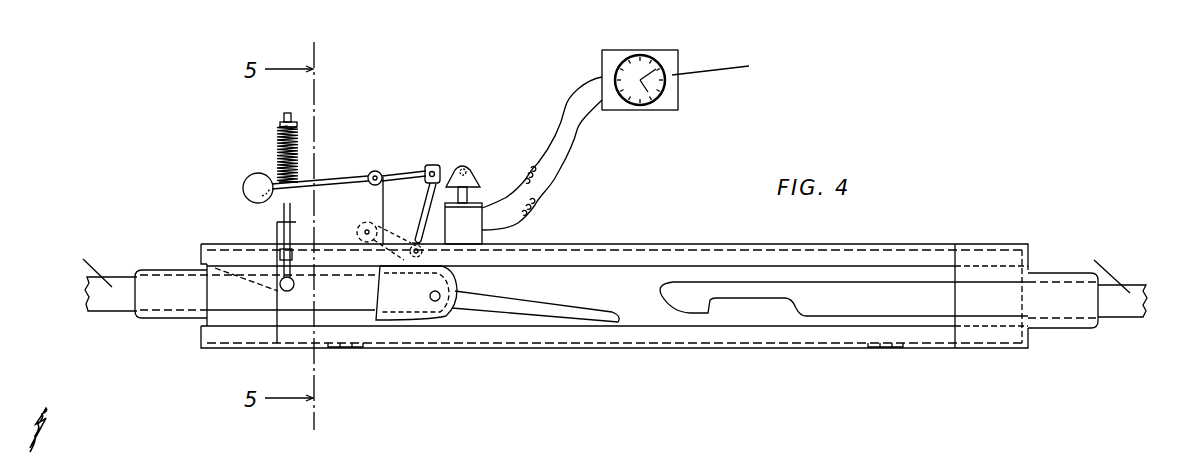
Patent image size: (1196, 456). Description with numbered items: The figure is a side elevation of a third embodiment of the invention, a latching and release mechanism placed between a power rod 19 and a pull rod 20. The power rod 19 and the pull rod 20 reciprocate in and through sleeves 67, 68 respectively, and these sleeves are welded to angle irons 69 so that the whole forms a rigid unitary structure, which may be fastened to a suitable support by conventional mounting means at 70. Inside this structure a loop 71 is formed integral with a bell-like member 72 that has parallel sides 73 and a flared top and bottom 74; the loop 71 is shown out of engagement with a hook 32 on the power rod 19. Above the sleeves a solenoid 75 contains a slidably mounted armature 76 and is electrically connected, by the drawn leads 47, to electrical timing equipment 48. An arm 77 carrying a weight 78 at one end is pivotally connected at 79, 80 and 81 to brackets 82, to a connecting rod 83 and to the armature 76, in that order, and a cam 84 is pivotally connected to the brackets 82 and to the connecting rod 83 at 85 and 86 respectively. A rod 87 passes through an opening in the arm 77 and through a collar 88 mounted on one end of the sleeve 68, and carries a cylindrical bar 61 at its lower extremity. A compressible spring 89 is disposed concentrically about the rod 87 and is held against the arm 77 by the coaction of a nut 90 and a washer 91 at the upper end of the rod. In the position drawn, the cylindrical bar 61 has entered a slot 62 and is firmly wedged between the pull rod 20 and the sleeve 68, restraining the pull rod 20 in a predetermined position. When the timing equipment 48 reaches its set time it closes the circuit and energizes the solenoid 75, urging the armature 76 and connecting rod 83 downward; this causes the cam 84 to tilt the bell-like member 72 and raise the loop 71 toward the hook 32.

The power rod 19 is at (1136, 312).
The pull rod 20 is at (123, 302).
The hook 32 is at (677, 290).
The electrical wires 47 is at (570, 160).
The timing equipment 48 is at (666, 101).
The cylindrical bar 61 is at (295, 287).
The slot 62 is at (258, 283).
The sleeve 67 is at (1071, 326).
The sleeve 68 is at (181, 315).
The angle irons 69 is at (705, 246).
The mounting means 70 is at (352, 348).
The loop 71 is at (557, 309).
The bell-like member 72 is at (456, 313).
The parallel sides 73 is at (416, 302).
The flared top and bottom 74 is at (470, 270).
The solenoid 75 is at (484, 230).
The armature 76 is at (467, 196).
The arm 77 is at (334, 179).
The weight 78 is at (246, 183).
The pivotal connection 79 is at (378, 176).
The pivotal connection 80 is at (439, 169).
The pivotal connection 81 is at (464, 167).
The brackets 82 is at (362, 211).
The connecting rod 83 is at (426, 200).
The cam 84 is at (387, 241).
The pivotal connection 85 is at (365, 236).
The pivotal connection 86 is at (423, 254).
The rod 87 is at (284, 220).
The collar 88 is at (281, 252).
The compressible spring 89 is at (296, 141).
The nut 90 is at (282, 119).
The washer 91 is at (280, 126).